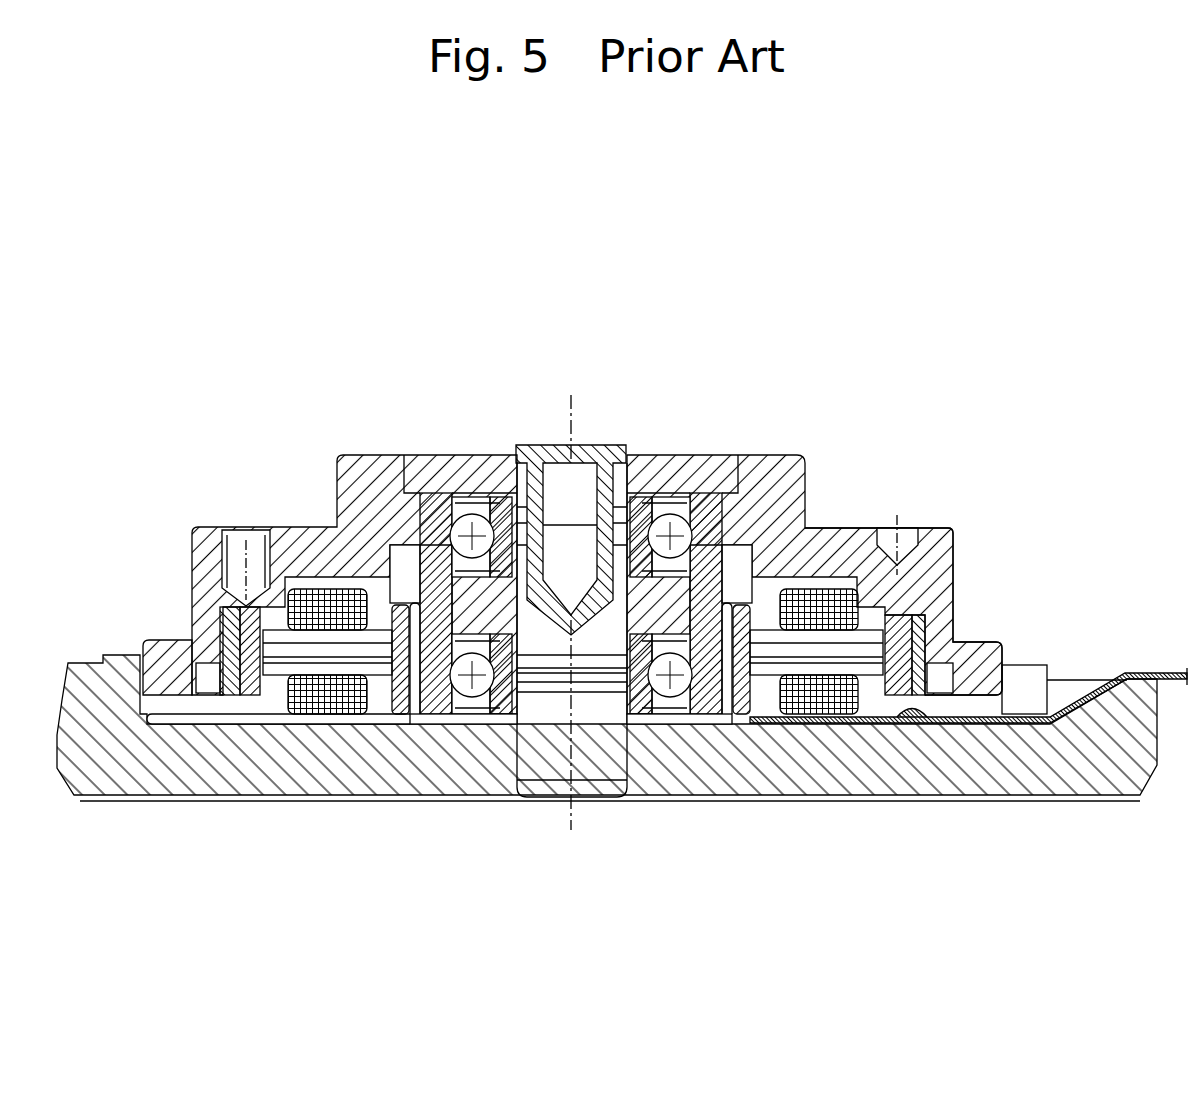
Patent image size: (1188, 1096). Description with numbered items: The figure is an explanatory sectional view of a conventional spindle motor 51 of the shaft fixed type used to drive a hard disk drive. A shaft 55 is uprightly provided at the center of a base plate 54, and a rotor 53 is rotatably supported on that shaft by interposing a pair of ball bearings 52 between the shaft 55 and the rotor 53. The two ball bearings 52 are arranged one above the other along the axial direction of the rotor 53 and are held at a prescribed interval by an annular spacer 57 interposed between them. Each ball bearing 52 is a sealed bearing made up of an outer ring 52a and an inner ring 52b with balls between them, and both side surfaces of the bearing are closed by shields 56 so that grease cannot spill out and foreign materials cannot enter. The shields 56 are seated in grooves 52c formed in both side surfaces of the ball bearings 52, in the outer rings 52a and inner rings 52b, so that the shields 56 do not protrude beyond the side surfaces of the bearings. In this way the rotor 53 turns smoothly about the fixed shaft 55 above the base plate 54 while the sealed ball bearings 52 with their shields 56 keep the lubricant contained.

The spindle motor 51 is at (591, 591).
The ball bearings 52 is at (720, 518).
The outer rings 52a is at (700, 468).
The inner rings 52b is at (505, 455).
The grooves 52c is at (450, 455).
The rotor 53 is at (952, 525).
The base plate 54 is at (960, 797).
The shaft 55 is at (543, 765).
The shields 56 is at (482, 455).
The annular spacers 57 is at (632, 600).